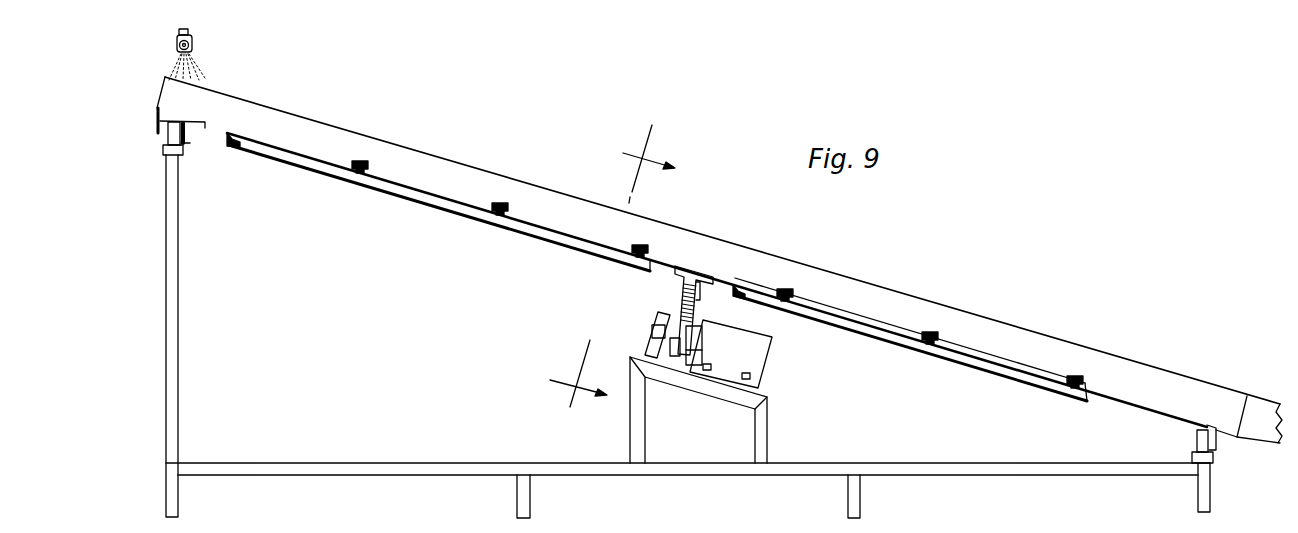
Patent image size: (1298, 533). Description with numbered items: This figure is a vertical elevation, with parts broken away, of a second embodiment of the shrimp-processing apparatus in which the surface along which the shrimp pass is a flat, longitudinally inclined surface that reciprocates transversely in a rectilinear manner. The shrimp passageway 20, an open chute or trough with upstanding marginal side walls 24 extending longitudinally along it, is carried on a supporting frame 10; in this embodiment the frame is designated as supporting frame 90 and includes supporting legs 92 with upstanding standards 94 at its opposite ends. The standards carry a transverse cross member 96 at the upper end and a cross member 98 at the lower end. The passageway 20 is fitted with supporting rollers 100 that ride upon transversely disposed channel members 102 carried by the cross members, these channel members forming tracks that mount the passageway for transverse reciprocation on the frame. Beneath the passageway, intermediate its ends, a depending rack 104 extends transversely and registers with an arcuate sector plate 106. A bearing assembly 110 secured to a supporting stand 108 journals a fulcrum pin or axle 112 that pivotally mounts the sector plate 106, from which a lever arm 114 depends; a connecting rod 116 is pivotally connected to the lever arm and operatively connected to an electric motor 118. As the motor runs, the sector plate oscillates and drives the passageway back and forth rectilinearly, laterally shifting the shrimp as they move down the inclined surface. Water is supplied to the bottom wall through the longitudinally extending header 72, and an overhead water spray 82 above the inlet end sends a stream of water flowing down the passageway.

The supporting frame 10 is at (601, 266).
The passageway 20 is at (477, 162).
The marginal side walls 24 is at (503, 178).
The longitudinally extending header 72 is at (893, 335).
The water spray 82 is at (193, 47).
The supporting frame 90 is at (395, 463).
The supporting legs 92 is at (527, 502).
The upstanding standards 94 is at (177, 218).
The cross member 96 is at (186, 134).
The cross member 98 is at (1222, 437).
The supporting rollers 100 is at (178, 128).
The channel members 102 is at (181, 153).
The depending rack 104 is at (681, 284).
The arcuate sector plate 106 is at (690, 309).
The supporting stand 108 is at (727, 392).
The bearing assembly 110 is at (655, 343).
The fulcrum pin or axle 112 is at (665, 315).
The lever arm 114 is at (674, 342).
The connecting rod 116 is at (683, 352).
The electric motor 118 is at (757, 355).